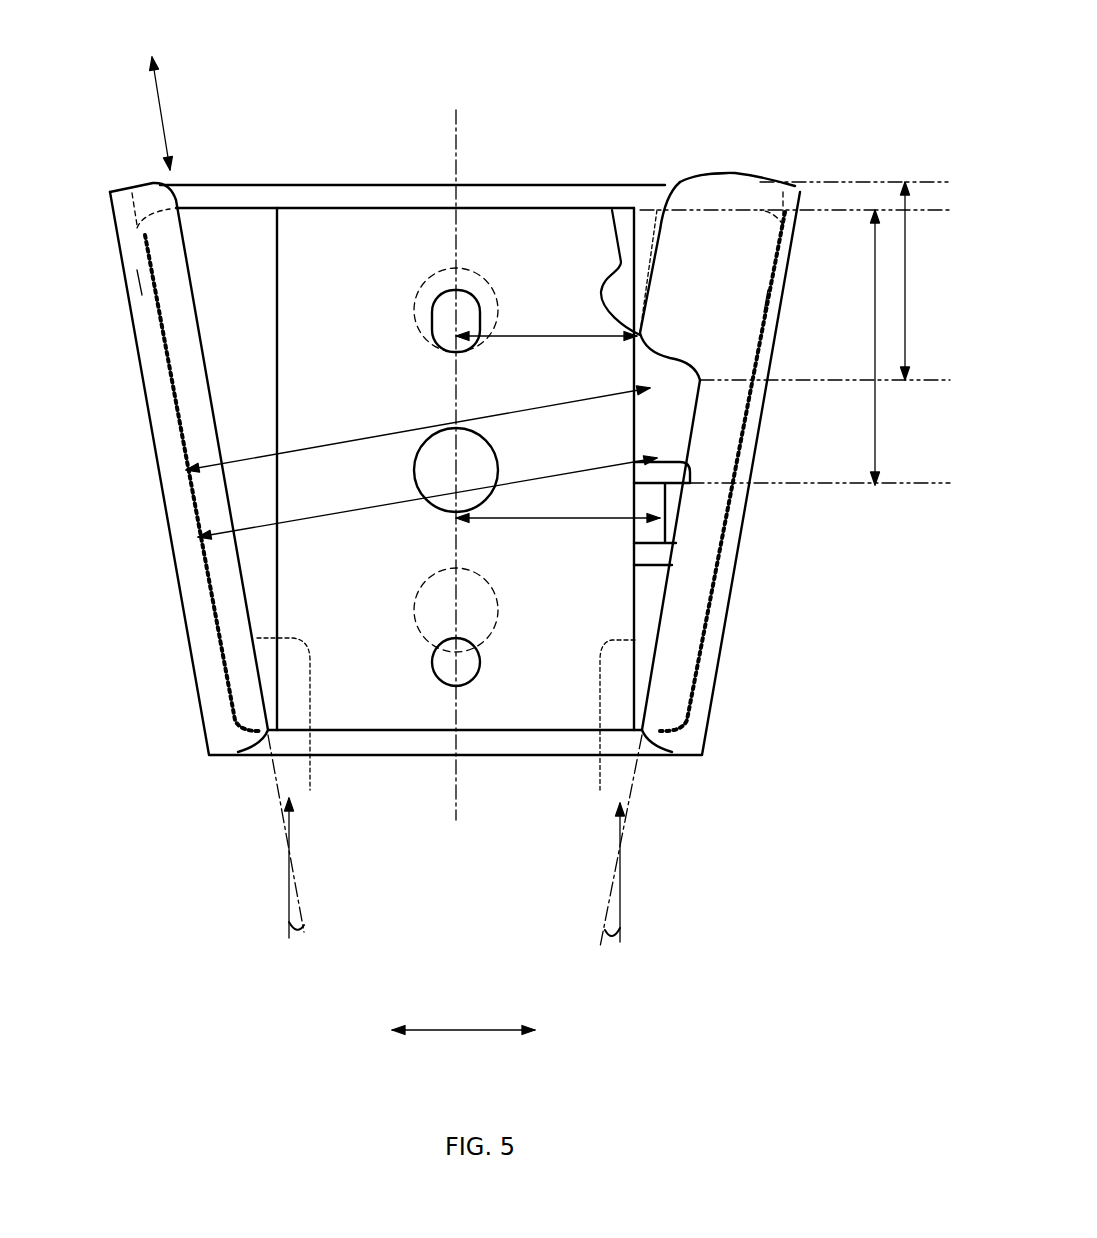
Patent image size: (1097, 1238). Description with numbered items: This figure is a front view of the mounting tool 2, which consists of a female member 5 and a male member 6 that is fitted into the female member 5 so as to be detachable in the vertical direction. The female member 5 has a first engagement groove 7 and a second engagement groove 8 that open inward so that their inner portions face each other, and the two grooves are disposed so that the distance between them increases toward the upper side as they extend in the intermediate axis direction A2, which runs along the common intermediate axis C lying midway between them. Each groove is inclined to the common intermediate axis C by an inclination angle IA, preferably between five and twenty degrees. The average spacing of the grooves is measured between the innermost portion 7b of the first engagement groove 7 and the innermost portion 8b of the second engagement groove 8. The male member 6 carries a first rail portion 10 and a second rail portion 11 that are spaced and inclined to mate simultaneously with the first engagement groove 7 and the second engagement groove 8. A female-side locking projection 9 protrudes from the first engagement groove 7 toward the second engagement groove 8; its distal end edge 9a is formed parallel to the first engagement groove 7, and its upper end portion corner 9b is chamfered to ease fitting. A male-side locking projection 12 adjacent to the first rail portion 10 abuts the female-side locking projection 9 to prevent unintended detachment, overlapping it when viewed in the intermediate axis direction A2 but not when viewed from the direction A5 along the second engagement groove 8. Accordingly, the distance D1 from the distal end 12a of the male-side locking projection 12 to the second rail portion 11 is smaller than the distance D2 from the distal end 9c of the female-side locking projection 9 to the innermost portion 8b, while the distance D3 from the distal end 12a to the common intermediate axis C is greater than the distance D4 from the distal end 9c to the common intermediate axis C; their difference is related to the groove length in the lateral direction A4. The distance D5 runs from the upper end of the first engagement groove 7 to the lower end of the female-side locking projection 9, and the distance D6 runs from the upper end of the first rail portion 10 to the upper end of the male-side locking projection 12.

The mounting tool 2 is at (712, 128).
The female member 5 is at (540, 185).
The male member 6 is at (385, 208).
The first engagement groove 7 is at (714, 497).
The innermost portion of the first engagement groove 7b is at (772, 300).
The second engagement groove 8 is at (180, 502).
The innermost portion of the second engagement groove 8b is at (140, 286).
The female-side locking projection 9 is at (665, 307).
The distal end edge 9a is at (659, 208).
The upper end portion corner 9b is at (670, 190).
The distal end of the female-side locking projection 9c is at (612, 210).
The first rail portion 10 is at (740, 567).
The second rail portion 11 is at (185, 563).
The male-side locking projection 12 is at (650, 537).
The distal end of the male-side locking projection 12a is at (668, 527).
The common intermediate axis C is at (457, 158).
The distance D1 is at (427, 497).
The distance D2 is at (418, 429).
The distance D3 is at (558, 506).
The distance D4 is at (546, 324).
The distance D5 is at (927, 281).
The distance D6 is at (890, 347).
The intermediate axis direction A2 is at (452, 841).
The lateral direction A4 is at (463, 1053).
The direction along the second engagement groove A5 is at (134, 113).
The inclination angle IA is at (455, 948).